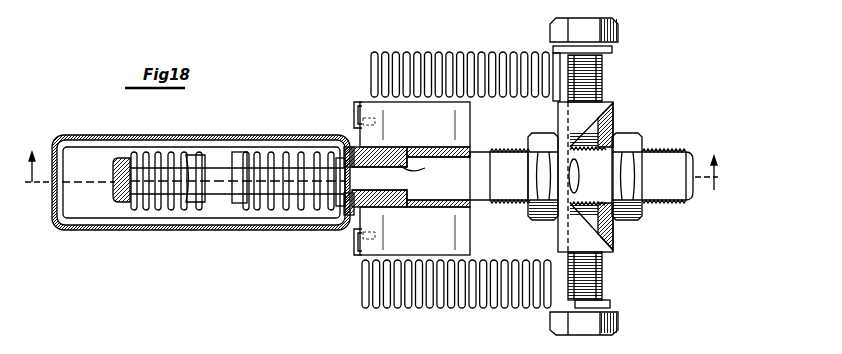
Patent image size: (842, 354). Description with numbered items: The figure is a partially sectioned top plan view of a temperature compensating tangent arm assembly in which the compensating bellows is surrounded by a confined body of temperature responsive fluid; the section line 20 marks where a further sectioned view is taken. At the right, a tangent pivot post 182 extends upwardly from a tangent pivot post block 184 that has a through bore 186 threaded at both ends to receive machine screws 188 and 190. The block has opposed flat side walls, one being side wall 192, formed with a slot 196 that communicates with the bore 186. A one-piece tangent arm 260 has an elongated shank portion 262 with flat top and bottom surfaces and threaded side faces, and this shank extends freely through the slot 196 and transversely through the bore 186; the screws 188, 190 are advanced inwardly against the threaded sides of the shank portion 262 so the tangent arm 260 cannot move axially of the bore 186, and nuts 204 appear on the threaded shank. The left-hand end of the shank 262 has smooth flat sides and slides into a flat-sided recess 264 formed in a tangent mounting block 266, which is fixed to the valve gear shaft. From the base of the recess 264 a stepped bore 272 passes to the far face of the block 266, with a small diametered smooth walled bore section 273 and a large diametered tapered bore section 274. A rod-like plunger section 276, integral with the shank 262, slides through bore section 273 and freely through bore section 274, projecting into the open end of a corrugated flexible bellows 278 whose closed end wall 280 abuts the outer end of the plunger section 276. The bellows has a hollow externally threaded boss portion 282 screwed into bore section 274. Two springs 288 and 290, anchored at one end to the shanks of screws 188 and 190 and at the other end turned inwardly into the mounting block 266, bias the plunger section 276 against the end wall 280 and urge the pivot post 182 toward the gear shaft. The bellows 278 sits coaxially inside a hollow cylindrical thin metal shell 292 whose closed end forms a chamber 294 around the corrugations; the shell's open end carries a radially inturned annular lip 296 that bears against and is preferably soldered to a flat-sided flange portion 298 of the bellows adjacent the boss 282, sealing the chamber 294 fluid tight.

The section line 20 is at (369, 187).
The tangent pivot post 182 is at (570, 172).
The tangent pivot post block 184 is at (620, 100).
The through bore 186 is at (613, 248).
The machine screw 188 is at (620, 28).
The machine screw 190 is at (618, 318).
The flat side wall 192 is at (602, 351).
The slot 196 is at (617, 130).
The nuts 204 is at (540, 213).
The tangent arm 260 is at (681, 139).
The shank portion 262 is at (487, 160).
The flat-sided recess 264 is at (457, 152).
The tangent mounting block 266 is at (470, 245).
The stepped bore 272 is at (370, 160).
The small diametered smooth walled bore section 273 is at (407, 147).
The large diametered tapered bore section 274 is at (372, 210).
The plunger section 276 is at (211, 173).
The corrugated flexible bellows 278 is at (268, 152).
The closed end wall 280 is at (119, 168).
The hollow externally threaded boss portion 282 is at (410, 210).
The spring 288 is at (510, 52).
The spring 290 is at (475, 306).
The thin metal shell 292 is at (100, 135).
The chamber 294 is at (78, 208).
The annular lip 296 is at (350, 130).
The flange portion 298 is at (340, 200).